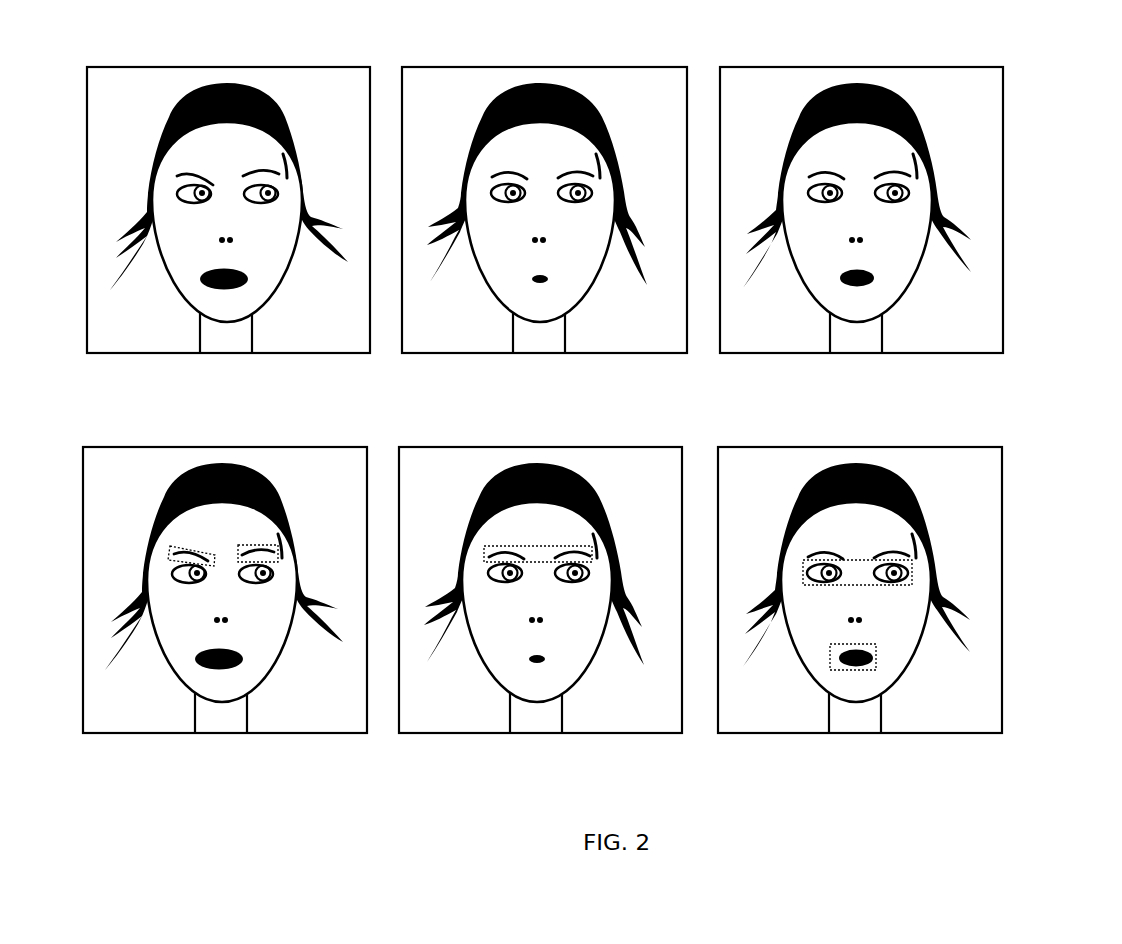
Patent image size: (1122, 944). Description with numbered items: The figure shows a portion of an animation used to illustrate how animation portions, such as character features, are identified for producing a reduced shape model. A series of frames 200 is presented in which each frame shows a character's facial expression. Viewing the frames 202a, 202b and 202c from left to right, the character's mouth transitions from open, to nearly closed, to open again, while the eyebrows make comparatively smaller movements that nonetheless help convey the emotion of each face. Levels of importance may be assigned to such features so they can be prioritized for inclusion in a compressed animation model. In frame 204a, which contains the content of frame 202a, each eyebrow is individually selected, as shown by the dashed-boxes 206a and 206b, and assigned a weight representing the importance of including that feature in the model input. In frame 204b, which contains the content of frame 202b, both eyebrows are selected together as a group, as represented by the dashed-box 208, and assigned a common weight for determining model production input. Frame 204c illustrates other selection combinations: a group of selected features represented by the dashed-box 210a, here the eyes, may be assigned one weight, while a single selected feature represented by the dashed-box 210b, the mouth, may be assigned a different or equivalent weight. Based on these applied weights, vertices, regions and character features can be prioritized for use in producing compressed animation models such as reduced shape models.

The series of frames 200 is at (1044, 124).
The frame 202a is at (129, 353).
The frame 202b is at (444, 353).
The frame 202c is at (748, 353).
The frame 204a is at (225, 605).
The frame 204b is at (540, 605).
The third image with labeled facial regions 204c is at (860, 605).
The dashed-box 206a is at (205, 544).
The dashed-box 206b is at (224, 575).
The dashed-box 208 is at (538, 543).
The dashed-box 210a is at (850, 589).
The dashed-box 210b is at (872, 646).